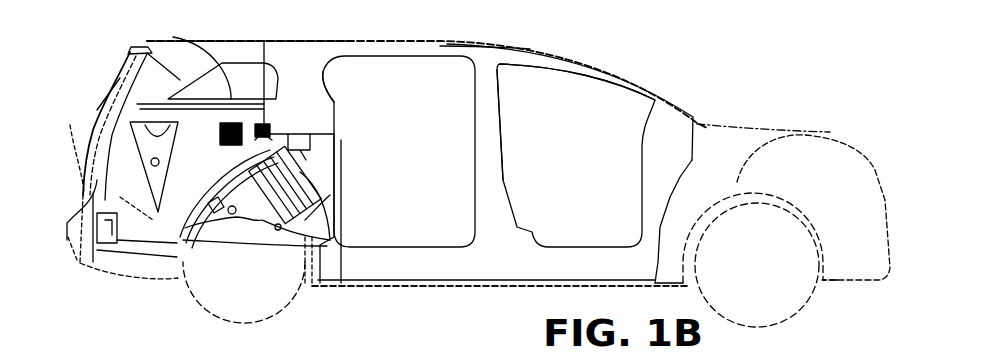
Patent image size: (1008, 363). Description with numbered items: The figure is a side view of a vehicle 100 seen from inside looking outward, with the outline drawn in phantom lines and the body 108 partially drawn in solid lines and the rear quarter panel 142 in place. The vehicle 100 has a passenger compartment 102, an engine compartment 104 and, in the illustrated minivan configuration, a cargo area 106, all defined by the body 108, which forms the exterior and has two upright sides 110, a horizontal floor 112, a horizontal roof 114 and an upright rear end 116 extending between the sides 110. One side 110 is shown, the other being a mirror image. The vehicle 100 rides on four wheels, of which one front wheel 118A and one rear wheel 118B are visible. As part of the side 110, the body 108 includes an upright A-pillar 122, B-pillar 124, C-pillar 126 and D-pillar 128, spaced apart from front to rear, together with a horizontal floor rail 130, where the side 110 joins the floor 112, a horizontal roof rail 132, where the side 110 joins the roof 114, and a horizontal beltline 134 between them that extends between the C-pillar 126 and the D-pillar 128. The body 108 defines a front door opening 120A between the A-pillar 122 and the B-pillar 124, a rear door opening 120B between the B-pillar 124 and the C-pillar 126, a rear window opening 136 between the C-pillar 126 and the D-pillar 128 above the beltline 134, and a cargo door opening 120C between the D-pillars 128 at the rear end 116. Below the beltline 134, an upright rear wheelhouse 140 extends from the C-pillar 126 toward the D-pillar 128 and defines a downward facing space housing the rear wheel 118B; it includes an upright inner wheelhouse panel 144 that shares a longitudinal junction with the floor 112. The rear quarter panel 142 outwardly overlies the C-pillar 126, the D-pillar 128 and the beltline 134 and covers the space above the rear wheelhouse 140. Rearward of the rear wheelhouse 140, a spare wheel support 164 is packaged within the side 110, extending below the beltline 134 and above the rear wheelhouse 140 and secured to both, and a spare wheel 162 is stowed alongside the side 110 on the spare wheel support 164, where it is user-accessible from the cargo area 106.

The vehicle 100 is at (540, 43).
The passenger compartment 102 is at (623, 78).
The engine compartment 104 is at (717, 143).
The cargo area 106 is at (305, 91).
The body 108 is at (577, 52).
The side 110 is at (597, 97).
The floor 112 is at (522, 285).
The roof 114 is at (435, 42).
The rear end 116 is at (93, 132).
The front wheel 118A is at (759, 224).
The rear wheel 118B is at (323, 218).
The front door opening 120A is at (613, 130).
The rear door opening 120B is at (447, 142).
The cargo door opening 120C is at (100, 106).
The A-pillar 122 is at (653, 92).
The B-pillar 124 is at (500, 107).
The C-pillar 126 is at (335, 108).
The D-pillar 128 is at (127, 85).
The floor rail 130 is at (435, 282).
The roof rail 132 is at (352, 45).
The beltline 134 is at (203, 85).
The rear window opening 136 is at (135, 53).
The rear wheelhouse 140 is at (313, 200).
The rear quarter panel 142 is at (225, 160).
The inner wheelhouse panel 144 is at (317, 213).
The spare wheel 162 is at (100, 160).
The spare wheel support 164 is at (100, 178).